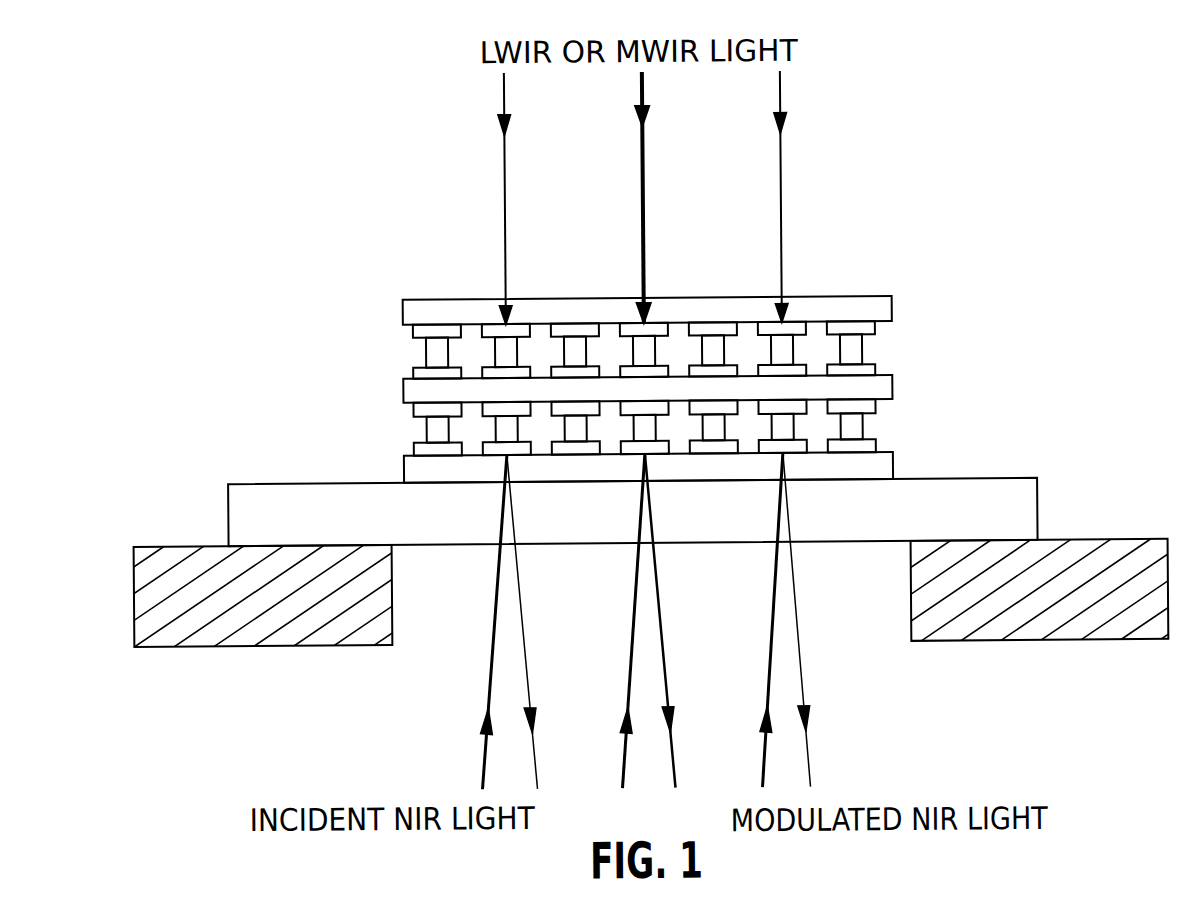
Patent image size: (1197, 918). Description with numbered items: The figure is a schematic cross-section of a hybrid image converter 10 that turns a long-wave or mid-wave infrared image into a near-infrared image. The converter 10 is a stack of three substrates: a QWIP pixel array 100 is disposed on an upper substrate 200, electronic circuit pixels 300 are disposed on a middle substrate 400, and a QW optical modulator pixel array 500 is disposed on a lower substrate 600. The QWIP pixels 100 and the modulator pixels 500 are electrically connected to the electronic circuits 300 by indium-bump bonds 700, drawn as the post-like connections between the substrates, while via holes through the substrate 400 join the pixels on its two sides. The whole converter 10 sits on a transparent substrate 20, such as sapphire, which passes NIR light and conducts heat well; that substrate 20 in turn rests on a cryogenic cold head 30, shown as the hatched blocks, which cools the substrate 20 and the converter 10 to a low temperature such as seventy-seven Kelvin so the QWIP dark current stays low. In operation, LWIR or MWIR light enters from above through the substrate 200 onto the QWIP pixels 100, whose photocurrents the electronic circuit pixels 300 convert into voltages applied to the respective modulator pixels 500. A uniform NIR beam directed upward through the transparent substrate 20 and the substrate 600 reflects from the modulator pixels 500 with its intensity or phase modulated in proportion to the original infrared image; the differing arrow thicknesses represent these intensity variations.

The hybrid image converter 10 is at (396, 262).
The transparent substrate 20 is at (226, 515).
The cryogenic cold head 30 is at (272, 650).
The QWIP pixel array 100 is at (405, 330).
The substrate 200 is at (900, 309).
The electronic circuit pixels 300 is at (405, 410).
The substrate 400 is at (900, 388).
The QW optical modulator pixel array 500 is at (405, 450).
The substrate 600 is at (900, 466).
The indium-bump bonds 700 is at (872, 350).